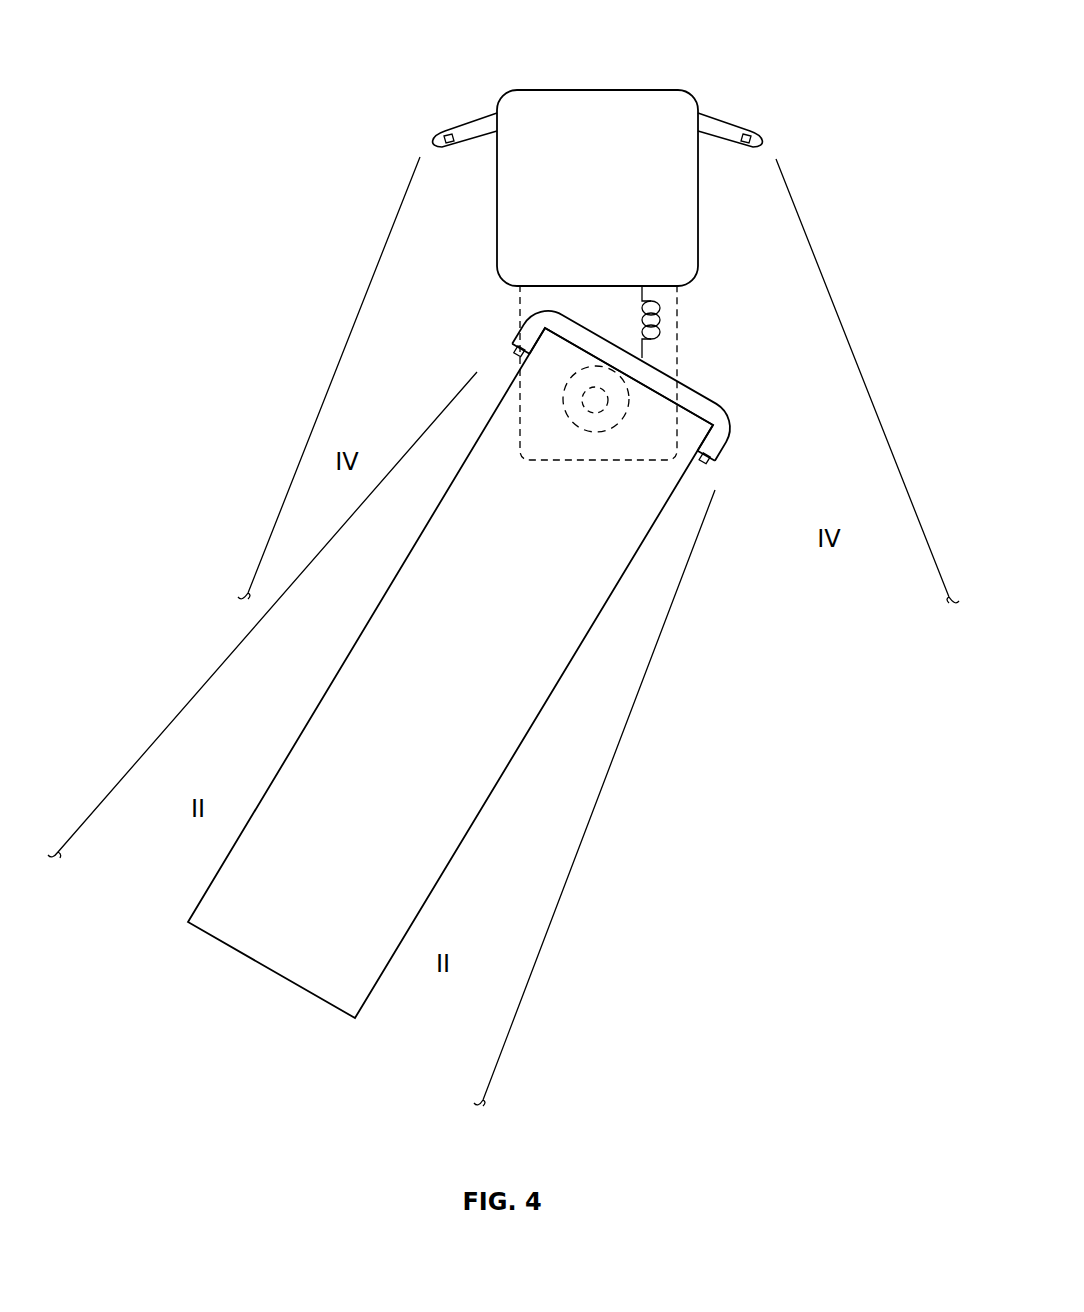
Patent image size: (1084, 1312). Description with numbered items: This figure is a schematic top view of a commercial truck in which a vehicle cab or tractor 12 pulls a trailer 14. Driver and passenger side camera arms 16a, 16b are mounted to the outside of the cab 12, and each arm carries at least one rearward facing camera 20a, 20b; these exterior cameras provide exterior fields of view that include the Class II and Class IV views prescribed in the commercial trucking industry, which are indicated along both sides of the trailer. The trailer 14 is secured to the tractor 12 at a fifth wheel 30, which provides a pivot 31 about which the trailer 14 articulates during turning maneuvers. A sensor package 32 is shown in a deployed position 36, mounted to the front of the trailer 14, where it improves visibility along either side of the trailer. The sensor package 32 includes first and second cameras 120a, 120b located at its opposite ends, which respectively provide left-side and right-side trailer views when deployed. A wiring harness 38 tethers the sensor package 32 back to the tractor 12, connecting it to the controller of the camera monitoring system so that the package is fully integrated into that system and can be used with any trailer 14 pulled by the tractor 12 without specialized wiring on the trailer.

The tractor 12 is at (620, 84).
The trailer 14 is at (186, 890).
The driver side camera arm 16a is at (473, 127).
The passenger side camera arm 16b is at (735, 127).
The rearward facing camera 20a is at (450, 145).
The rearward facing camera 20b is at (745, 145).
The fifth wheel 30 is at (566, 424).
The pivot 31 is at (597, 408).
The sensor package 32 is at (700, 402).
The deployed position 36 is at (617, 382).
The wiring harness 38 is at (660, 318).
The first camera 120a is at (518, 347).
The second camera 120b is at (710, 458).